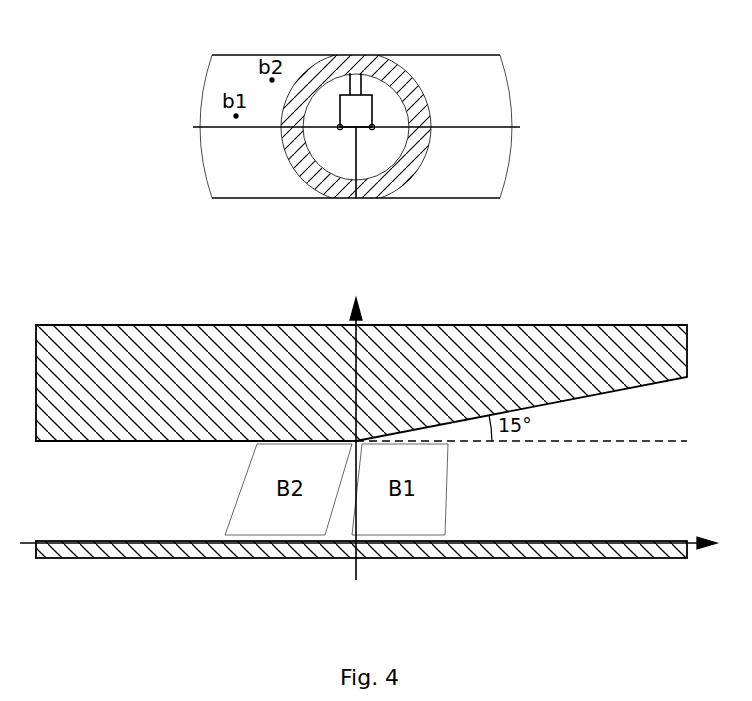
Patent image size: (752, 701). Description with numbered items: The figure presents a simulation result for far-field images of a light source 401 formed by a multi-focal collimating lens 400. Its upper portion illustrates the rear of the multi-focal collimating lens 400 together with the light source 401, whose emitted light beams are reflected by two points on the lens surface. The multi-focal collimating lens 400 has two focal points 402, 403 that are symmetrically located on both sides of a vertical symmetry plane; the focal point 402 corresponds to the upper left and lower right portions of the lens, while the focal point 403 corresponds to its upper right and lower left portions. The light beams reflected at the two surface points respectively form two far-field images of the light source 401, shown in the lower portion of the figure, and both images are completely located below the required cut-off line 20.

The multi-focal collimating lens 400 is at (246, 58).
The light source 401 is at (352, 112).
The focal point 402 is at (340, 128).
The focal point 403 is at (372, 127).
The cut-off line 20 is at (520, 409).